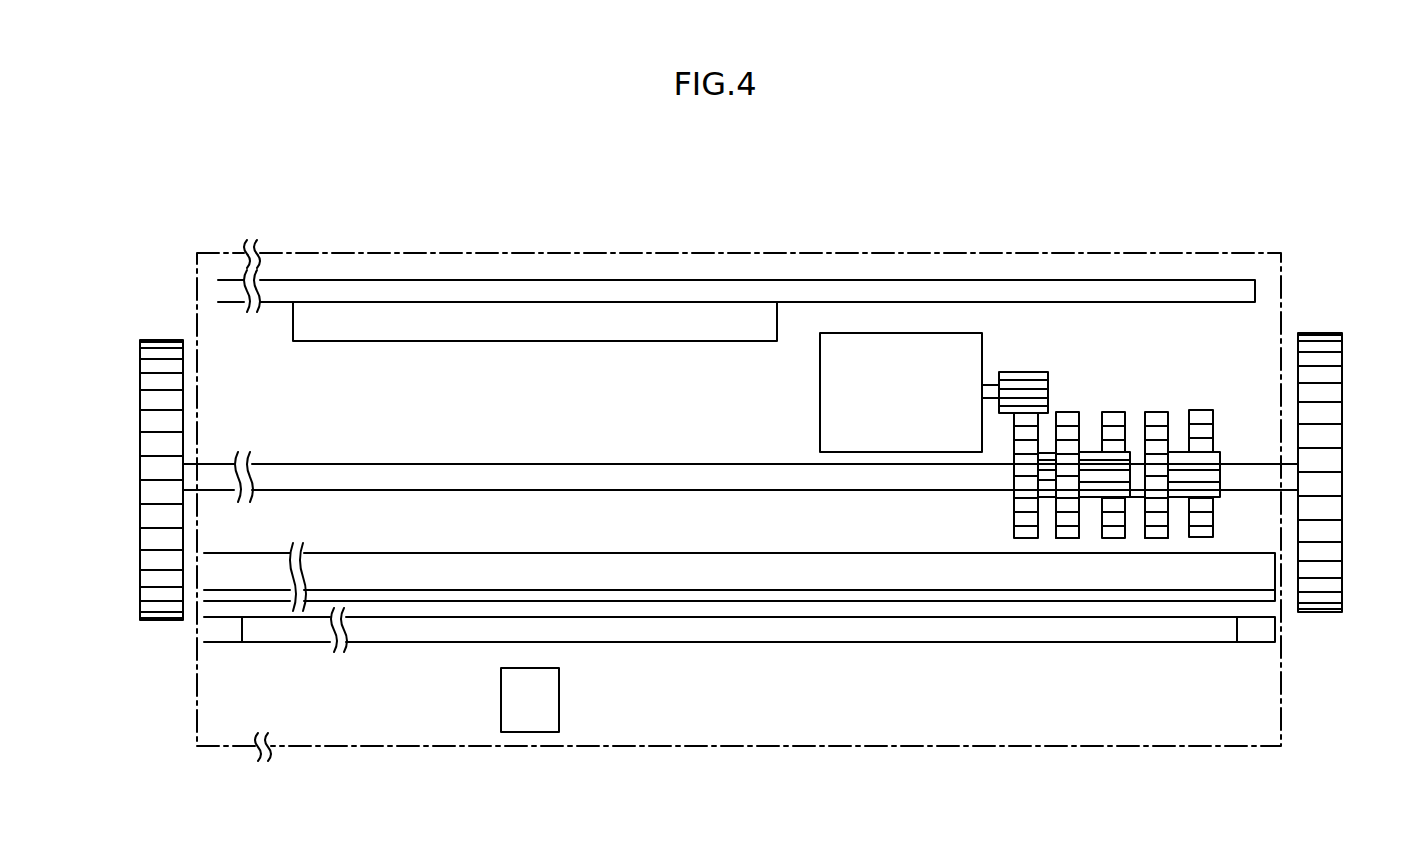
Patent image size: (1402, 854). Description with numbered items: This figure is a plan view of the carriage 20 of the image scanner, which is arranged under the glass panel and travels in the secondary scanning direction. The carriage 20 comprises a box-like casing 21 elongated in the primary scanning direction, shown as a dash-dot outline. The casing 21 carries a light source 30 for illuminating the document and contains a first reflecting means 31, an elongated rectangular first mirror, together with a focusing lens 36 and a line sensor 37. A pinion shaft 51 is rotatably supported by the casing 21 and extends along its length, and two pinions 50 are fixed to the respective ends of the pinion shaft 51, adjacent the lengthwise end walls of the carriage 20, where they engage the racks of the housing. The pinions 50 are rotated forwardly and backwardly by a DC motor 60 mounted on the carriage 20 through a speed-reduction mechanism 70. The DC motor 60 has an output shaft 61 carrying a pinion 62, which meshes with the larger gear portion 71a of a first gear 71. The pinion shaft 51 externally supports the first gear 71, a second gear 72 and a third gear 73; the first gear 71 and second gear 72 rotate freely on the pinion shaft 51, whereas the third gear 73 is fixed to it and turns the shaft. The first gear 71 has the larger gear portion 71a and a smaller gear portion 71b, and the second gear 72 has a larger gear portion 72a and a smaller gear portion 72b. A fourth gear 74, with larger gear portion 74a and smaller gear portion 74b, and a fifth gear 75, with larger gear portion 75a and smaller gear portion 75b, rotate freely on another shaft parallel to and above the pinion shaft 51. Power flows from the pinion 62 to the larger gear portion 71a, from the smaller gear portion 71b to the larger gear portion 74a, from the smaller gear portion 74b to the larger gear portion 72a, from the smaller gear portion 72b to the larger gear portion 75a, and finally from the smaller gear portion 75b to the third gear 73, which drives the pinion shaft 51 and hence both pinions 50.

The carriage 20 is at (656, 253).
The casing 21 is at (922, 253).
The light source 30 is at (905, 628).
The first reflecting means 31 is at (778, 582).
The focusing lens 36 is at (559, 708).
The line sensor 37 is at (487, 341).
The pinion 50 is at (140, 445).
The pinion shaft 51 is at (578, 463).
The DC motor 60 is at (820, 403).
The output shaft 61 is at (990, 385).
The pinion 62 is at (1040, 372).
The speed-reduction mechanism 70 is at (1093, 506).
The first gear 71 is at (1003, 504).
The larger gear portion 71a is at (1003, 531).
The smaller gear portion 71b is at (1048, 493).
The second gear 72 is at (1117, 401).
The larger gear portion 72a is at (1136, 452).
The smaller gear portion 72b is at (1137, 493).
The third gear 73 is at (1210, 401).
The fourth gear 74 is at (1071, 401).
The larger gear portion 74a is at (1068, 538).
The smaller gear portion 74b is at (1095, 493).
The fifth gear 75 is at (1162, 401).
The larger gear portion 75a is at (1157, 538).
The smaller gear portion 75b is at (1213, 501).